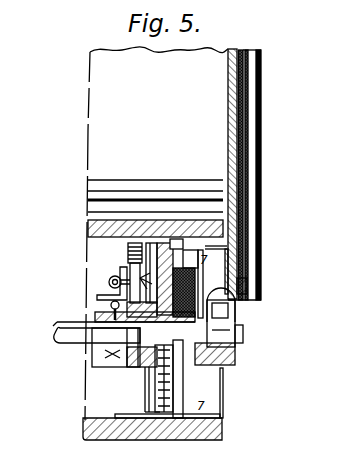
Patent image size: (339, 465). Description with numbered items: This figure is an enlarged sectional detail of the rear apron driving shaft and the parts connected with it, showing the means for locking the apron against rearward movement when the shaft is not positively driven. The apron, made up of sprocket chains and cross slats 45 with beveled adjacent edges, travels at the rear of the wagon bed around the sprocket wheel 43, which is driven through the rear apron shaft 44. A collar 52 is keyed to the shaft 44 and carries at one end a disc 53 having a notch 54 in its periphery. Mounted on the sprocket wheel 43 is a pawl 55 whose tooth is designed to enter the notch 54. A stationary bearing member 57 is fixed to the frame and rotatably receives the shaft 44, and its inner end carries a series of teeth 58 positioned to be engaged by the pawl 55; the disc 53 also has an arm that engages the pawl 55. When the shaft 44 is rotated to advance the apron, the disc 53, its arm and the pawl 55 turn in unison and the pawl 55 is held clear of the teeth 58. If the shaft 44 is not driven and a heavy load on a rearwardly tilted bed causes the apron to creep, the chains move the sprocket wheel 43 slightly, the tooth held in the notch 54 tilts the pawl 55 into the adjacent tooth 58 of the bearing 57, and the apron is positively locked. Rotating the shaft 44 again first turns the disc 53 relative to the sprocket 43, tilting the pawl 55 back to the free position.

The sprocket wheel 43 is at (162, 243).
The rear apron shaft 44 is at (64, 346).
The apron slats 45 is at (88, 237).
The collar 52 is at (110, 315).
The disc 53 is at (190, 350).
The notch 54 is at (190, 300).
The pawl 55 is at (178, 283).
The stationary bearing member 57 is at (243, 332).
The teeth 58 is at (235, 353).